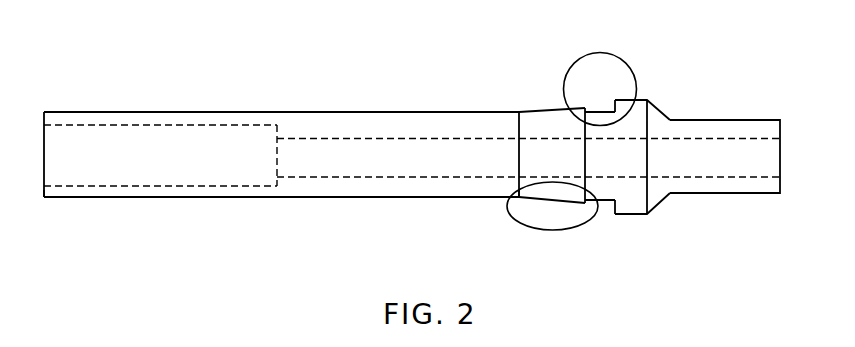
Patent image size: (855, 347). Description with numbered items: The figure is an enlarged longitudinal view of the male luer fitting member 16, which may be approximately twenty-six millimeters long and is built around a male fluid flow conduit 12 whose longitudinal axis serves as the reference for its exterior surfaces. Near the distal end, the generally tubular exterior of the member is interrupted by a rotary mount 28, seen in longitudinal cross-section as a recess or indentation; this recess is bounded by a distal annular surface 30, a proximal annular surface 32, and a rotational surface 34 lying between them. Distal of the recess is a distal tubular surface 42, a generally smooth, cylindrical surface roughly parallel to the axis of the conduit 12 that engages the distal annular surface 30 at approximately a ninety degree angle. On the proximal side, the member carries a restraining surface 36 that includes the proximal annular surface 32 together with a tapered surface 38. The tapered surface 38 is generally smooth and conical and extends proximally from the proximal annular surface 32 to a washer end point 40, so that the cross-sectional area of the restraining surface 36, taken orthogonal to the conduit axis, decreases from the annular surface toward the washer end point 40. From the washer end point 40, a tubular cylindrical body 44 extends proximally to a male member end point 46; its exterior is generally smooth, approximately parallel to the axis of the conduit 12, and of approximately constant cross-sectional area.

The male fluid flow conduit 12 is at (768, 155).
The male luer fitting member 16 is at (333, 74).
The rotary mount 28 is at (618, 57).
The distal annular surface 30 is at (610, 99).
The proximal annular surface 32 is at (588, 102).
The rotational surface 34 is at (598, 111).
The restraining surface 36 is at (570, 231).
The tapered surface 38 is at (548, 202).
The washer end point 40 is at (513, 201).
The distal tubular surface 42 is at (635, 214).
The cylindrical body 44 is at (297, 197).
The male member end point 46 is at (44, 197).